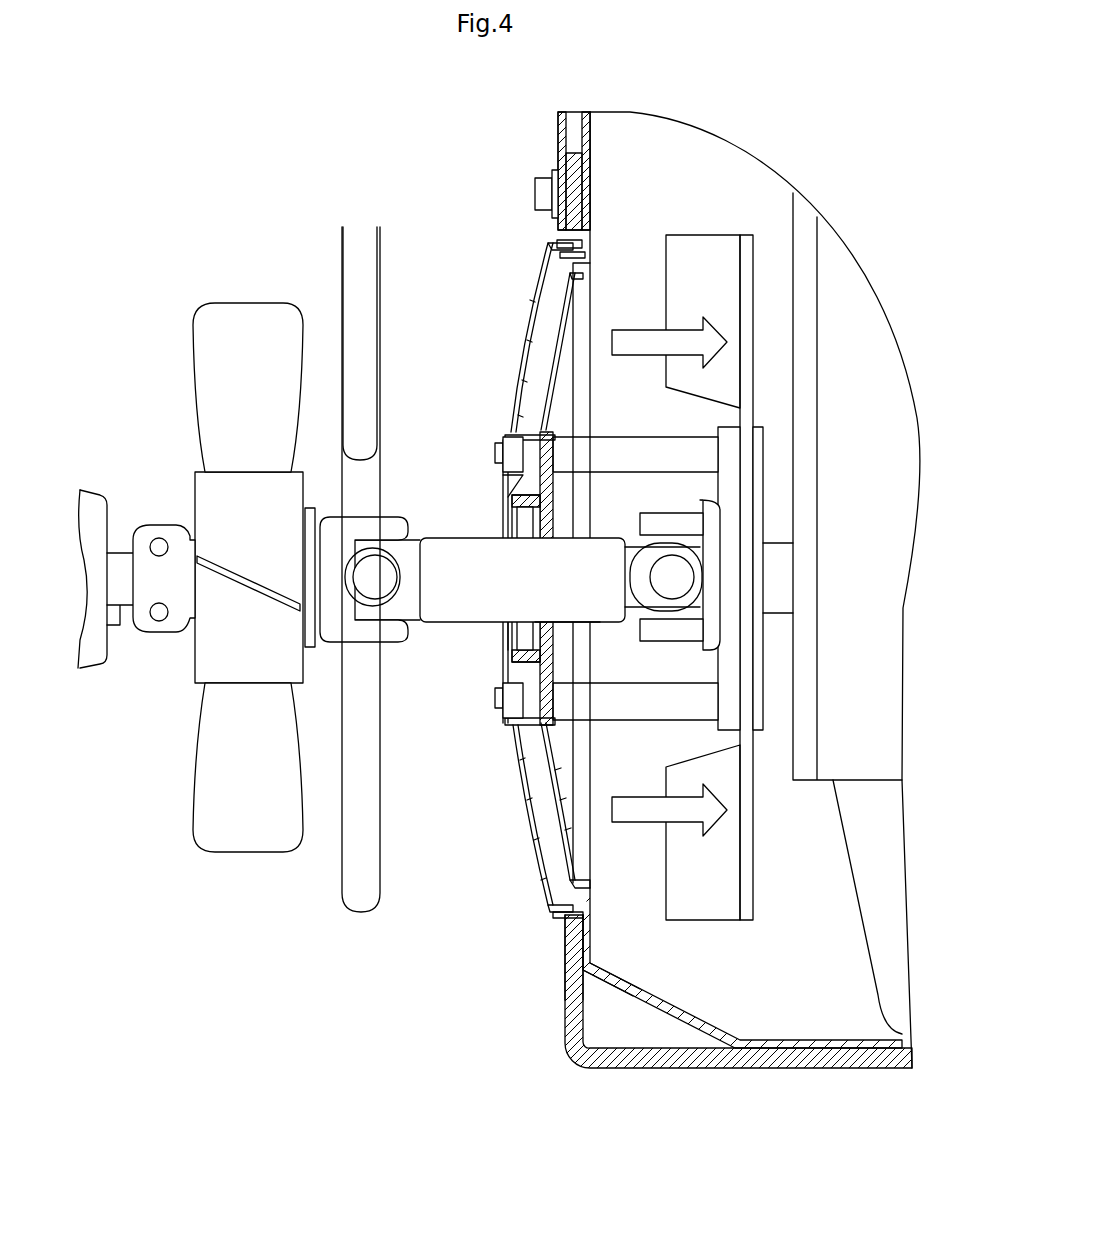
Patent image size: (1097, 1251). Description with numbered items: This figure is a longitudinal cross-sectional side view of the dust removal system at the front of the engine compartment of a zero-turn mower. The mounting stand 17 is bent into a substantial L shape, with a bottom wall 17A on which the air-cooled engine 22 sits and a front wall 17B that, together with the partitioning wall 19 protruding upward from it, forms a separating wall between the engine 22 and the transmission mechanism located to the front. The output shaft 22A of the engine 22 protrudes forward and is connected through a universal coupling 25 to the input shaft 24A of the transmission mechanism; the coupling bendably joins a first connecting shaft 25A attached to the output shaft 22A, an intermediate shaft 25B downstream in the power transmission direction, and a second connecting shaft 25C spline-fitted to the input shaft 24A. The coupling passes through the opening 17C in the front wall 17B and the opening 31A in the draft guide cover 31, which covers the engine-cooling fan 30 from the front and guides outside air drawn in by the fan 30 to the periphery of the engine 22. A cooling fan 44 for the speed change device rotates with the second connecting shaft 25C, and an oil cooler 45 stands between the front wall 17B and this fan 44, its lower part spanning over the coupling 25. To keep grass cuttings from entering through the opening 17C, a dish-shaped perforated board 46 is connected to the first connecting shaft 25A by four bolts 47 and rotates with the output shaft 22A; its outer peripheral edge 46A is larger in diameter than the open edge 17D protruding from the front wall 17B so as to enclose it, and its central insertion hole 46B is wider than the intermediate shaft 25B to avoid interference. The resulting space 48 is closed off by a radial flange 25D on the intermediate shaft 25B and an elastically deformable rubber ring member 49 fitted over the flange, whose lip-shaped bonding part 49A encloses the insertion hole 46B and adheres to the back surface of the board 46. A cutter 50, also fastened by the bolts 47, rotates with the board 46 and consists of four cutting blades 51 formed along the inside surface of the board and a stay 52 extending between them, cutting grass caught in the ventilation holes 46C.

The mounting stand 17 is at (706, 1070).
The bottom wall 17A is at (757, 1070).
The front wall 17B is at (565, 998).
The opening 17C is at (560, 918).
The open edge 17D is at (556, 245).
The partitioning wall 19 is at (558, 165).
The air-cooled engine 22 is at (843, 835).
The output shaft 22A is at (778, 612).
The input shaft 24A is at (116, 640).
The universal coupling 25 is at (600, 540).
The first connecting shaft 25A is at (767, 478).
The intermediate shaft 25B is at (420, 540).
The second connecting shaft 25C is at (390, 517).
The flange 25D is at (540, 600).
The engine-cooling fan 30 is at (700, 235).
The draft guide cover 31 is at (643, 1000).
The opening 31A is at (600, 890).
The cooling fan for the speed change device 44 is at (196, 795).
The oil cooler 45 is at (342, 292).
The perforated board 46 is at (520, 735).
The outer peripheral edge 46A is at (580, 247).
The insertion hole 46B is at (503, 528).
The ventilation holes 46C is at (517, 400).
The bolts 47 is at (653, 437).
The space 48 is at (500, 630).
The ring member 49 is at (505, 672).
The bonding part 49A is at (517, 630).
The cutter 50 is at (545, 782).
The cutting blades 51 is at (565, 792).
The stay 52 is at (553, 658).